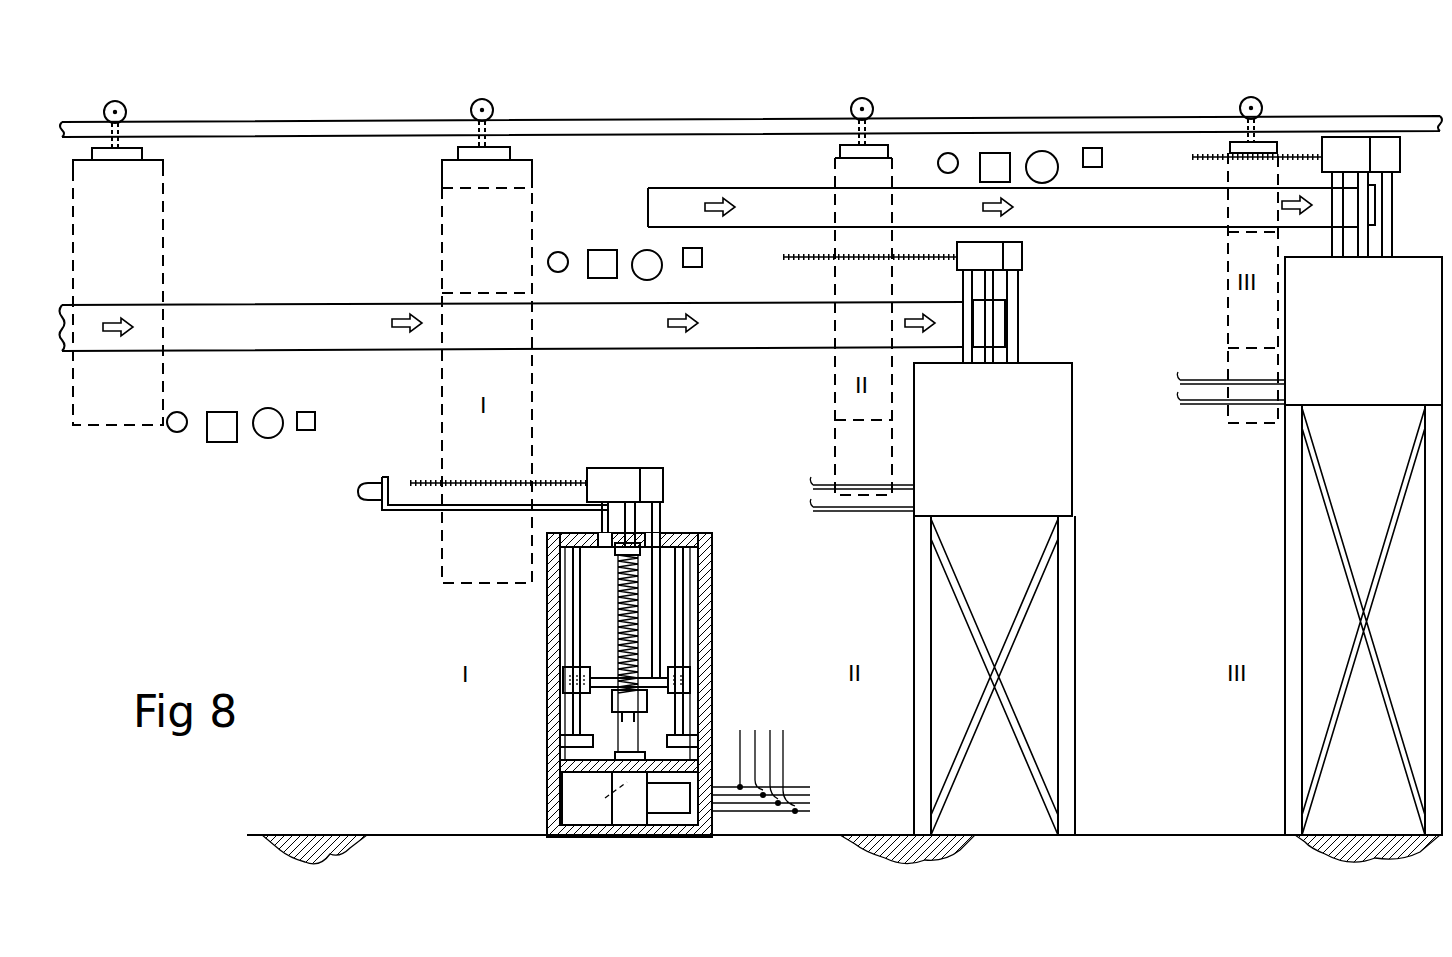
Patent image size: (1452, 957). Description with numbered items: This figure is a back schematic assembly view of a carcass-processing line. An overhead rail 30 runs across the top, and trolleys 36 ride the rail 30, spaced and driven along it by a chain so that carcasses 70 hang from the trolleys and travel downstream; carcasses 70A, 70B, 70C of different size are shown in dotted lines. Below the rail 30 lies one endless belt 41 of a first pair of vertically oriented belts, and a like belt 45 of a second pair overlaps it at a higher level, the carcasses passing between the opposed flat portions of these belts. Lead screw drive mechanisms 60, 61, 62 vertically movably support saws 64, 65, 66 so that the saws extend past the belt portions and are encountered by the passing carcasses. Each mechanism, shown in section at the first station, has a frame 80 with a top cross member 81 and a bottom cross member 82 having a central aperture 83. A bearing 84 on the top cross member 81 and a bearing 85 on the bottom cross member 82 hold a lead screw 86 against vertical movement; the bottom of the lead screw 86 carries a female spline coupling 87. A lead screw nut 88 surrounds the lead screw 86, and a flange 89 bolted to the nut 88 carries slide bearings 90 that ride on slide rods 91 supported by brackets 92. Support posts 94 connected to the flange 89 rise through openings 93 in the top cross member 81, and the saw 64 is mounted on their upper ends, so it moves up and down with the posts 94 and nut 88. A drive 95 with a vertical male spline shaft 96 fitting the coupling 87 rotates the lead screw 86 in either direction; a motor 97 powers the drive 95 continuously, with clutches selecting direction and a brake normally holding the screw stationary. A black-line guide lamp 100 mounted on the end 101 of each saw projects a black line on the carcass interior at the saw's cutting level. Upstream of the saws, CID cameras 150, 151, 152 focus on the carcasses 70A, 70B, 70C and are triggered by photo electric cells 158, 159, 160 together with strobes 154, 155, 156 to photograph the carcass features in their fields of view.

The overhead rail 30 is at (725, 123).
The trolley 36 is at (125, 105).
The endless belt 41 is at (250, 358).
The endless belt 45 is at (1110, 228).
The lead screw drive mechanism 60 is at (651, 666).
The lead screw drive mechanism 61 is at (1063, 462).
The lead screw drive mechanism 62 is at (1415, 257).
The saw 64 is at (663, 470).
The saw 65 is at (1022, 258).
The saw 66 is at (1400, 158).
The carcass 70 is at (163, 393).
The carcass 70A is at (532, 400).
The carcass 70B is at (835, 375).
The carcass 70C is at (1228, 313).
The frame 80 is at (724, 582).
The top cross member 81 is at (683, 533).
The bottom cross member 82 is at (560, 765).
The central aperture 83 is at (587, 798).
The bearing 84 is at (613, 552).
The bearing 85 is at (615, 755).
The lead screw 86 is at (636, 712).
The female spline coupling 87 is at (648, 752).
The lead screw nut 88 is at (632, 700).
The flange 89 is at (626, 695).
The slide bearing 90 is at (705, 675).
The slide rod 91 is at (682, 627).
The bracket 92 is at (693, 553).
The opening 93 is at (660, 527).
The support post 94 is at (657, 512).
The drive 95 is at (625, 813).
The male spline shaft 96 is at (597, 803).
The motor 97 is at (672, 805).
The black-line guide lamp 100 is at (315, 430).
The end of saw 101 is at (407, 512).
The CID camera 150 is at (276, 410).
The CID camera 151 is at (655, 278).
The CID camera 152 is at (1057, 158).
The strobe 154 is at (221, 442).
The strobe 155 is at (602, 250).
The strobe 156 is at (998, 153).
The photo electric cell 158 is at (176, 432).
The photo electric cell 159 is at (560, 252).
The photo electric cell 160 is at (948, 153).